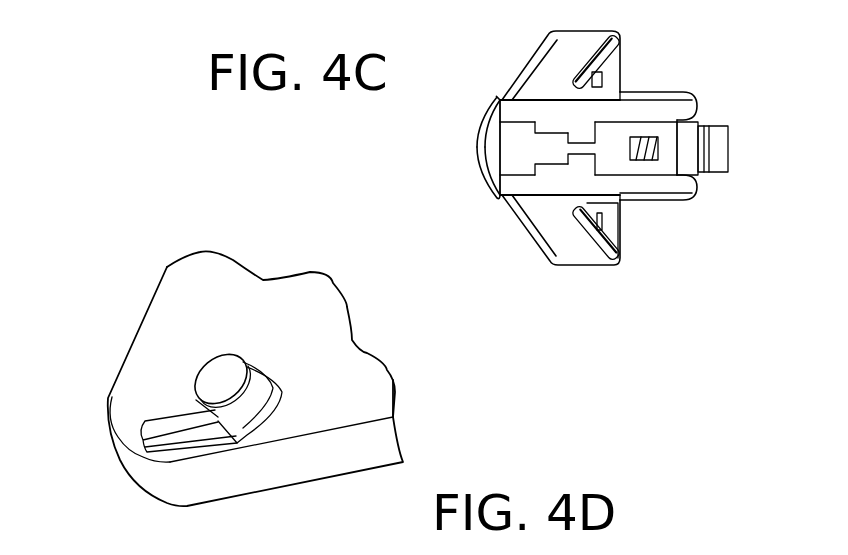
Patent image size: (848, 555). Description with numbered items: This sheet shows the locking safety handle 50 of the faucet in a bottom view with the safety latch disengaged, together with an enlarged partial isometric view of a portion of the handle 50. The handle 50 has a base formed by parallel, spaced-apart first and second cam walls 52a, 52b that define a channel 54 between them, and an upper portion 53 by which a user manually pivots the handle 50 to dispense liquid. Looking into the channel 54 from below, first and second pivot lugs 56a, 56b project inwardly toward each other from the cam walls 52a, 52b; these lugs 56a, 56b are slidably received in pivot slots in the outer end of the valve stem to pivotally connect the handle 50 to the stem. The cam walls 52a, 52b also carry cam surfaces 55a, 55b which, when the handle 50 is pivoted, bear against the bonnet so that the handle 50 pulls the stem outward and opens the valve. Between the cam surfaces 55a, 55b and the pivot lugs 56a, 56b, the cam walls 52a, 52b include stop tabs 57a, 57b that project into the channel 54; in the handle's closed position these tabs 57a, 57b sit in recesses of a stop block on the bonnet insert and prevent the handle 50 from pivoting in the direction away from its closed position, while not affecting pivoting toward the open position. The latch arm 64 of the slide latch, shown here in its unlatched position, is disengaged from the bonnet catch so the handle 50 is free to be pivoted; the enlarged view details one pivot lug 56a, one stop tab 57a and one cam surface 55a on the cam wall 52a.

In FIG. 4C, the handle 50 is at (708, 266).
In FIG. 4C, the first cam wall 52a is at (665, 195).
In FIG. 4D, the first cam wall 52a is at (208, 266).
In FIG. 4C, the second cam wall 52b is at (665, 103).
In FIG. 4C, the upper portion 53 is at (577, 266).
In FIG. 4C, the channel 54 is at (513, 147).
In FIG. 4C, the cam surface 55a is at (492, 192).
In FIG. 4D, the cam surface 55a is at (123, 472).
In FIG. 4C, the cam surface 55b is at (491, 97).
In FIG. 4C, the first pivot lug 56a is at (585, 160).
In FIG. 4D, the first pivot lug 56a is at (257, 383).
In FIG. 4C, the second pivot lug 56b is at (588, 135).
In FIG. 4C, the stop tab 57a is at (548, 172).
In FIG. 4D, the stop tab 57a is at (170, 415).
In FIG. 4C, the stop tab 57b is at (548, 128).
In FIG. 4C, the latch arm 64 is at (718, 128).